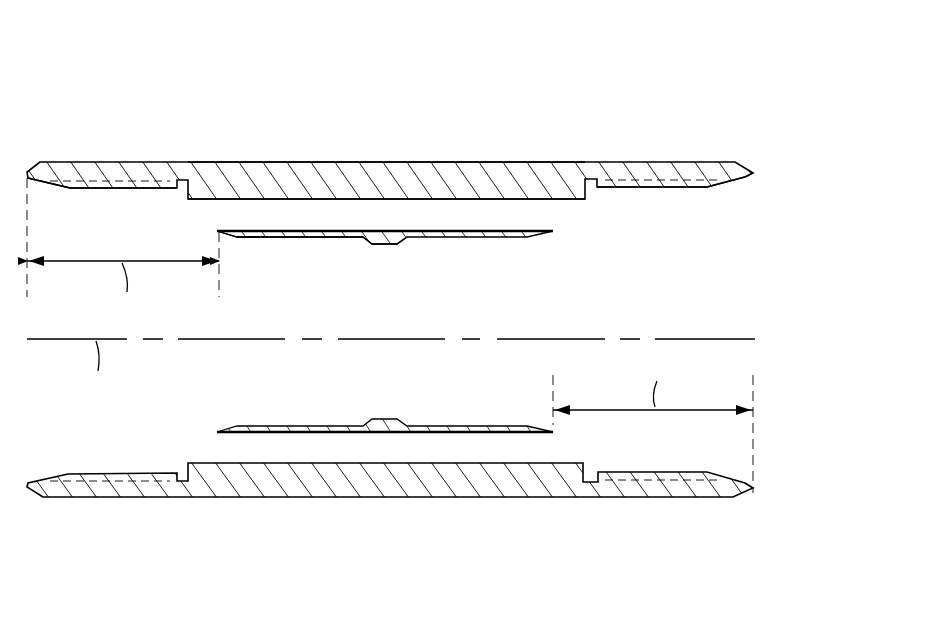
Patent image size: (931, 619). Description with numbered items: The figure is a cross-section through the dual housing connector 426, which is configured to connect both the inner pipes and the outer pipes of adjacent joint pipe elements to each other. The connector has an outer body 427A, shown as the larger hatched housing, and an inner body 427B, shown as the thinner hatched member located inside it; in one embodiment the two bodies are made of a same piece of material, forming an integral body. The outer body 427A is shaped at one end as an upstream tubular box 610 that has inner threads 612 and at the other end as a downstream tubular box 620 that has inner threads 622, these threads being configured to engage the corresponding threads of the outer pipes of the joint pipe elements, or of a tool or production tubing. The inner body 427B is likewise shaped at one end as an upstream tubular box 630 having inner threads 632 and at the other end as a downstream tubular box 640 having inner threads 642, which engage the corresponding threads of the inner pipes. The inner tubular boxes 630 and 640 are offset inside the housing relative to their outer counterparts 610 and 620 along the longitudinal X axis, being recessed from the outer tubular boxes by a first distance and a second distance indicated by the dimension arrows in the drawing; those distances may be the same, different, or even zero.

The dual housing connector 426 is at (684, 56).
The upstream tubular box 610 is at (676, 163).
The inner threads 612 is at (671, 188).
The downstream tubular box 620 is at (89, 178).
The inner threads 622 is at (97, 189).
The outer body 427A is at (306, 175).
The inner body 427B is at (443, 229).
The upstream tubular box 630 is at (518, 229).
The inner threads 632 is at (457, 241).
The downstream tubular box 640 is at (253, 229).
The inner threads 642 is at (317, 241).